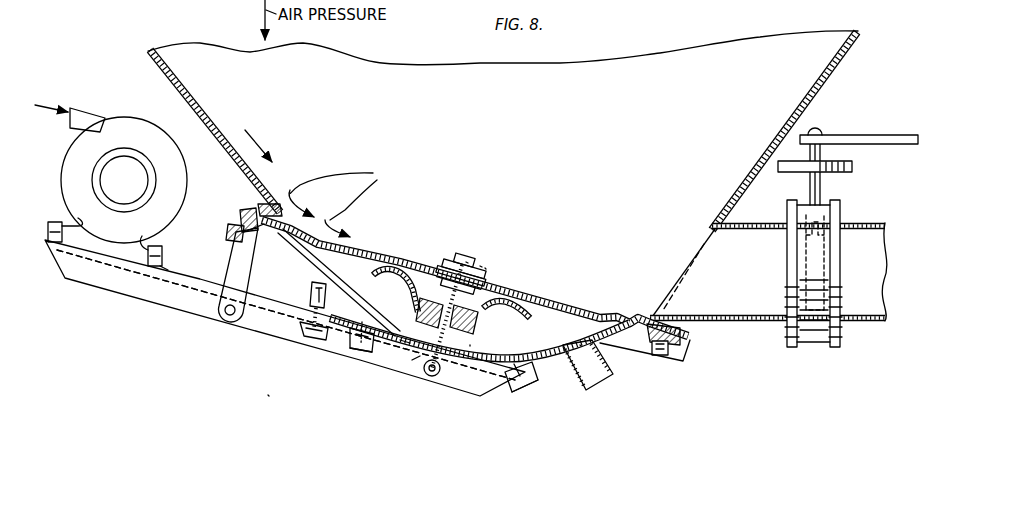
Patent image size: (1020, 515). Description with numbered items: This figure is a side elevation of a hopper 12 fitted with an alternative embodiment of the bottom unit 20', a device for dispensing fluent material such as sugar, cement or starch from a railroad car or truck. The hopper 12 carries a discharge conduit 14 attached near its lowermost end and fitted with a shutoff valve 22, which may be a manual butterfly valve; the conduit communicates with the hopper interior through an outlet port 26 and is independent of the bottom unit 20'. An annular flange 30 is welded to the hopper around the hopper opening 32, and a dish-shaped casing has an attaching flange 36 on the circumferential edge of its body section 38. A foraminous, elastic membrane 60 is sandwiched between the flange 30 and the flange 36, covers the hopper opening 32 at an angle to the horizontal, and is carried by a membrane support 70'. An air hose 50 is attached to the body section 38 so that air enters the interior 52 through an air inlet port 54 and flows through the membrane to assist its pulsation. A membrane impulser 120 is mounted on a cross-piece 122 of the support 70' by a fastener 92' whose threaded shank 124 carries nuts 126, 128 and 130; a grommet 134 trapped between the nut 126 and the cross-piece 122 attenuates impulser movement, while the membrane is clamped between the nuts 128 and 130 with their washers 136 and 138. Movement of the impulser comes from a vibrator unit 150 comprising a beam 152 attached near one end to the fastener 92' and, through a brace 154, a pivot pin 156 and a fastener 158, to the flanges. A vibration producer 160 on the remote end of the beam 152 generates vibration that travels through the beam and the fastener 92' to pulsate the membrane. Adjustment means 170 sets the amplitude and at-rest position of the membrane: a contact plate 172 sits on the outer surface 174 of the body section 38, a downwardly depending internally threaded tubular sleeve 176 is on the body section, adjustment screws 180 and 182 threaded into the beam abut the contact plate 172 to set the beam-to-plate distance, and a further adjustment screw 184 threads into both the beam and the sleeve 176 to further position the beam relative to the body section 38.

The hopper 12 is at (199, 96).
The discharge conduit 14 is at (735, 323).
The bottom unit 20' is at (243, 415).
The shutoff valve 22 is at (847, 106).
The outlet port 26 is at (697, 258).
The annular flange 30 is at (682, 338).
The hopper opening 32 is at (315, 230).
The attaching flange 36 is at (682, 363).
The body section 38 is at (547, 360).
The air hose 50 is at (578, 385).
The interior 52 is at (547, 322).
The air inlet port 54 is at (574, 342).
The foraminous membrane 60 is at (357, 250).
The membrane support 70' is at (506, 384).
The fastener 92' is at (401, 387).
The membrane impulser 120 is at (489, 263).
The cross-piece 122 is at (481, 290).
The threaded shank 124 is at (438, 378).
The nut 126 is at (405, 345).
The nut 128 is at (430, 262).
The nut 130 is at (477, 260).
The grommet 134 is at (417, 312).
The washer 136 is at (458, 270).
The washer 138 is at (487, 260).
The vibrator unit 150 is at (151, 314).
The beam 152 is at (197, 304).
The brace 154 is at (237, 260).
The pivot pin 156 is at (232, 316).
The fastener 158 is at (255, 214).
The vibration producer 160 is at (110, 100).
The adjustment means 170 is at (308, 288).
The contact plate 172 is at (347, 322).
The outer surface 174 is at (310, 268).
The tubular sleeve 176 is at (309, 298).
The adjustment screw 180 is at (509, 394).
The adjustment screw 182 is at (360, 348).
The adjustment screw 184 is at (313, 330).